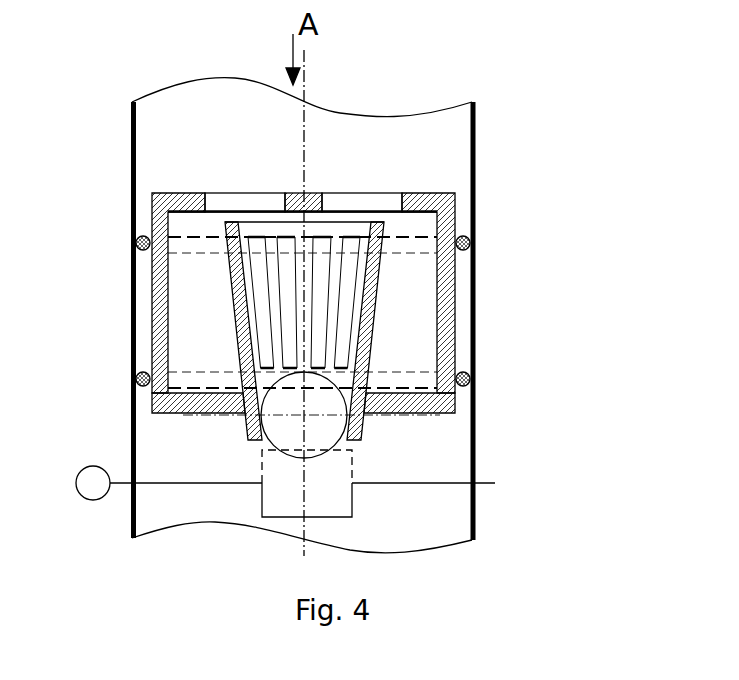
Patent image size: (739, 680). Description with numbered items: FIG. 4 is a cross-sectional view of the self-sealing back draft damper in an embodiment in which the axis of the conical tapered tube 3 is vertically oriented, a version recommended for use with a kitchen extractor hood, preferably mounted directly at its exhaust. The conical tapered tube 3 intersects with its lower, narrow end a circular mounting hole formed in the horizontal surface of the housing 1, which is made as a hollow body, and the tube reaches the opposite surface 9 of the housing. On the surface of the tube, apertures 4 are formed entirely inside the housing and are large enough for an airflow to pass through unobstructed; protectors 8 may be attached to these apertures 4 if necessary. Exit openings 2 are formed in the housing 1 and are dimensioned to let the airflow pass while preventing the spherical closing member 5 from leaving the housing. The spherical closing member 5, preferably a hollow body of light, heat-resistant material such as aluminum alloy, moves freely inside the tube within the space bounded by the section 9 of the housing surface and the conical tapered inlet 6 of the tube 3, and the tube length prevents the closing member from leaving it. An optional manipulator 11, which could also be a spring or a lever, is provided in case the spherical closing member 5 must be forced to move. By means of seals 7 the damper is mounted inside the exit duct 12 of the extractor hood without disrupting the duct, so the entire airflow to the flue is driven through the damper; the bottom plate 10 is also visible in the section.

The housing 1 is at (457, 267).
The exit openings 2 is at (368, 202).
The conical tapered tube 3 is at (237, 353).
The apertures 4 is at (345, 353).
The spherical closing member 5 is at (332, 402).
The conical tapered inlet 6 is at (352, 437).
The seals 7 is at (142, 247).
The protectors 8 is at (279, 268).
The surface of the housing 9 is at (292, 202).
The bottom plate 10 is at (368, 403).
The manipulator 11 is at (93, 477).
The exit duct 12 is at (477, 420).